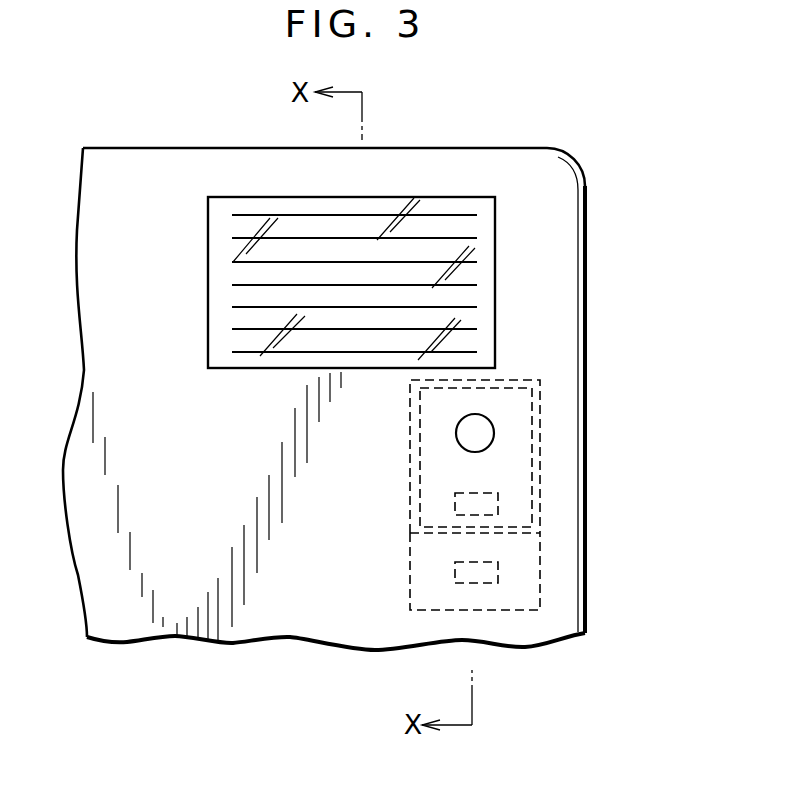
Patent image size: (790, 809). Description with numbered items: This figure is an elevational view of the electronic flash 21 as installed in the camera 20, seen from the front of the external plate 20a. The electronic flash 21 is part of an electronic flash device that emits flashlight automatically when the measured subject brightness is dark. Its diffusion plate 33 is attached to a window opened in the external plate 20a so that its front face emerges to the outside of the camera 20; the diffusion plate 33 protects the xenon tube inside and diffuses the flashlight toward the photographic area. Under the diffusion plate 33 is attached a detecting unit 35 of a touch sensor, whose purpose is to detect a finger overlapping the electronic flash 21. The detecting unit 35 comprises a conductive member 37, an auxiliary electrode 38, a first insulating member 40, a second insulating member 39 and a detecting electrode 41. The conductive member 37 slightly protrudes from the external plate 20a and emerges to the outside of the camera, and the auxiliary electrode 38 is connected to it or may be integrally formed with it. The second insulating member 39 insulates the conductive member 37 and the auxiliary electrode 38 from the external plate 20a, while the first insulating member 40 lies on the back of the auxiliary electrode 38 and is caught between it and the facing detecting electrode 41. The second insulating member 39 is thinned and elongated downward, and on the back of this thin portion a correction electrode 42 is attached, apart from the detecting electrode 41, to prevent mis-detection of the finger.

The camera 20 is at (152, 122).
The external plate 20a is at (569, 161).
The electronic flash 21 is at (520, 262).
The diffusion plate 33 is at (218, 262).
The detecting unit 35 is at (530, 445).
The conductive member 37 is at (468, 433).
The auxiliary electrode 38 is at (540, 404).
The second insulating member 39 is at (540, 590).
The first insulating member 40 is at (515, 535).
The detecting electrode 41 is at (455, 507).
The correction electrode 42 is at (455, 576).